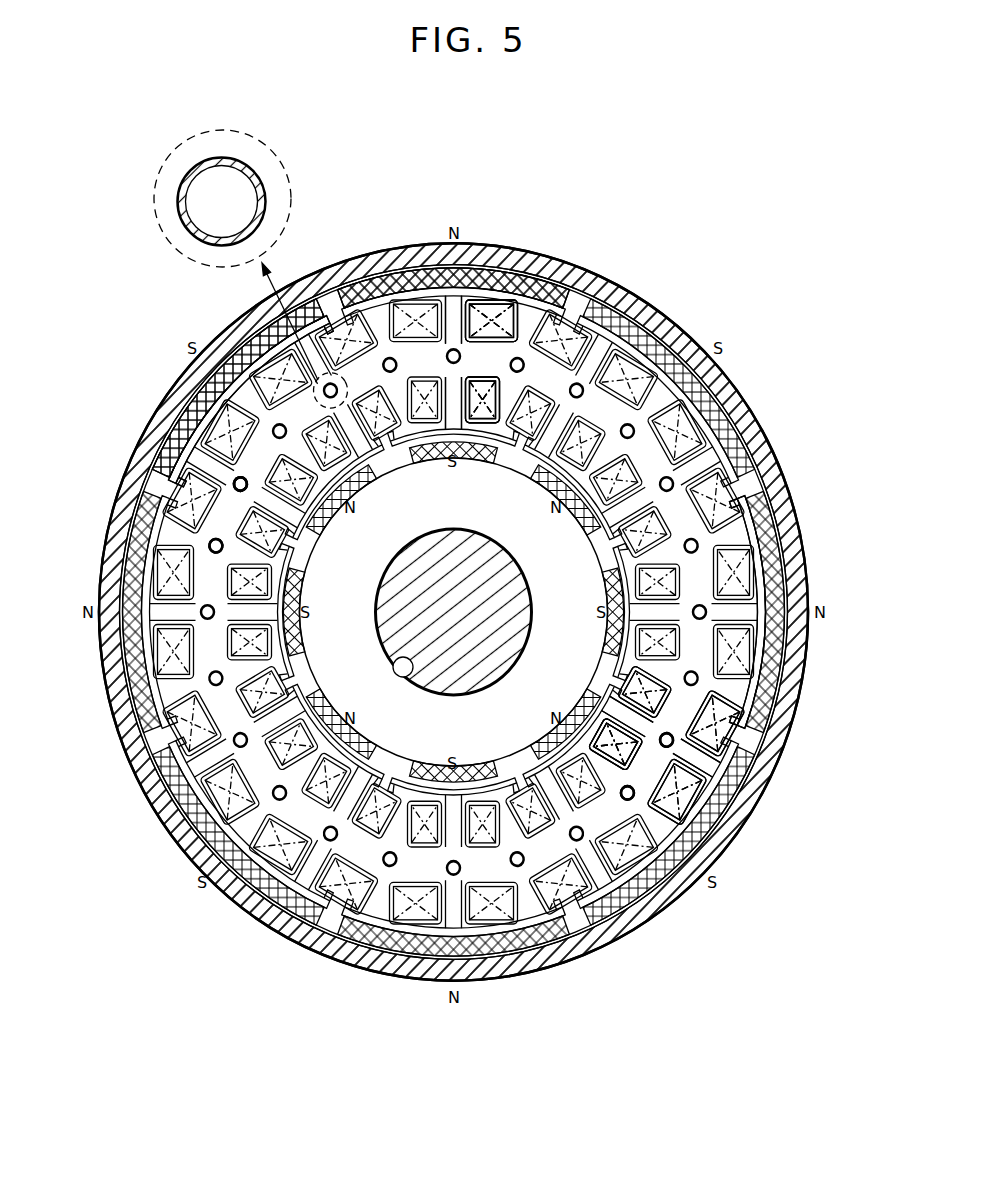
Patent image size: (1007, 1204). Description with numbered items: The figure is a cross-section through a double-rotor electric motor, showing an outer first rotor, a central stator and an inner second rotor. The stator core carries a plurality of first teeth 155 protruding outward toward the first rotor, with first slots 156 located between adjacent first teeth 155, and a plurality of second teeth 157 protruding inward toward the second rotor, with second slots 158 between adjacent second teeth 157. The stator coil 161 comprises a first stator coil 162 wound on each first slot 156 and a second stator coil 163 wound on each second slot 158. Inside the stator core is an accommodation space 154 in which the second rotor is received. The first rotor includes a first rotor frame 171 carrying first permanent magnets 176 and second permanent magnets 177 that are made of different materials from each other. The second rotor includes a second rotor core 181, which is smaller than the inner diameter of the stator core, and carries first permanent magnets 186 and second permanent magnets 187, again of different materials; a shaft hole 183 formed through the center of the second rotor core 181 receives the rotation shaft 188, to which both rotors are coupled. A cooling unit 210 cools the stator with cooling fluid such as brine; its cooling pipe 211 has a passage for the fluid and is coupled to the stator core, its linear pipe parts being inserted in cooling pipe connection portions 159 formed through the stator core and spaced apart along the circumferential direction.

The accommodation space 154 is at (752, 712).
The first teeth 155 is at (745, 412).
The first slots 156 is at (752, 488).
The second teeth 157 is at (633, 718).
The second slots 158 is at (667, 712).
The cooling pipe connection portions 159 is at (182, 207).
The stator coil 161 is at (540, 172).
The first stator coil 162 is at (486, 312).
The second stator coil 163 is at (498, 385).
The first rotor frame 171 is at (578, 283).
The first permanent magnets 176 is at (379, 283).
The second permanent magnets 177 is at (627, 327).
The second rotor core 181 is at (512, 727).
The shaft hole 183 is at (407, 672).
The first permanent magnets 186 is at (643, 363).
The second permanent magnets 187 is at (440, 345).
The rotation shaft 188 is at (445, 658).
The cooling unit 210 is at (72, 497).
The cooling pipe 211 is at (232, 478).